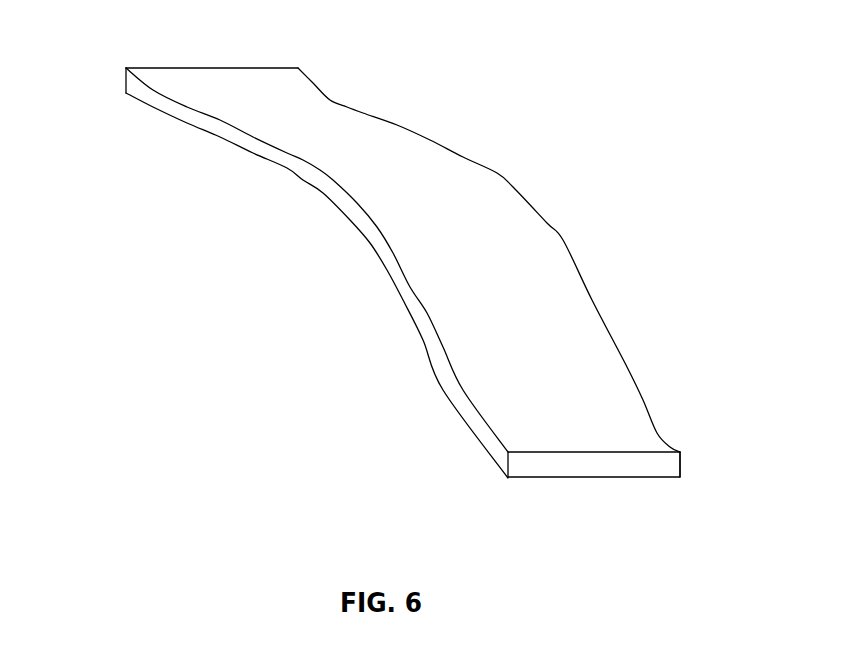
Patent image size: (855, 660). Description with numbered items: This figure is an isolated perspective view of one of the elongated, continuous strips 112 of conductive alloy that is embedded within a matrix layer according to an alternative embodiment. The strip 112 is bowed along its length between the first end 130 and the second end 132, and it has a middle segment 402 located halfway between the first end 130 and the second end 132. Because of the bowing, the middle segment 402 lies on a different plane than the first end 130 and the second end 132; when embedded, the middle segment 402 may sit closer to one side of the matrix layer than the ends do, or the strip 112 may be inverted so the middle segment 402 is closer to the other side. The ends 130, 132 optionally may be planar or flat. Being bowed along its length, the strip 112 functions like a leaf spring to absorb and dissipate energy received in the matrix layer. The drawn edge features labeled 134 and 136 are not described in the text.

The elongated continuous strip 112 is at (402, 291).
The first end 130 is at (126, 85).
The second end 132 is at (577, 468).
The side surface 134 is at (472, 417).
The end edge 136 is at (682, 463).
The middle segment 402 is at (512, 213).